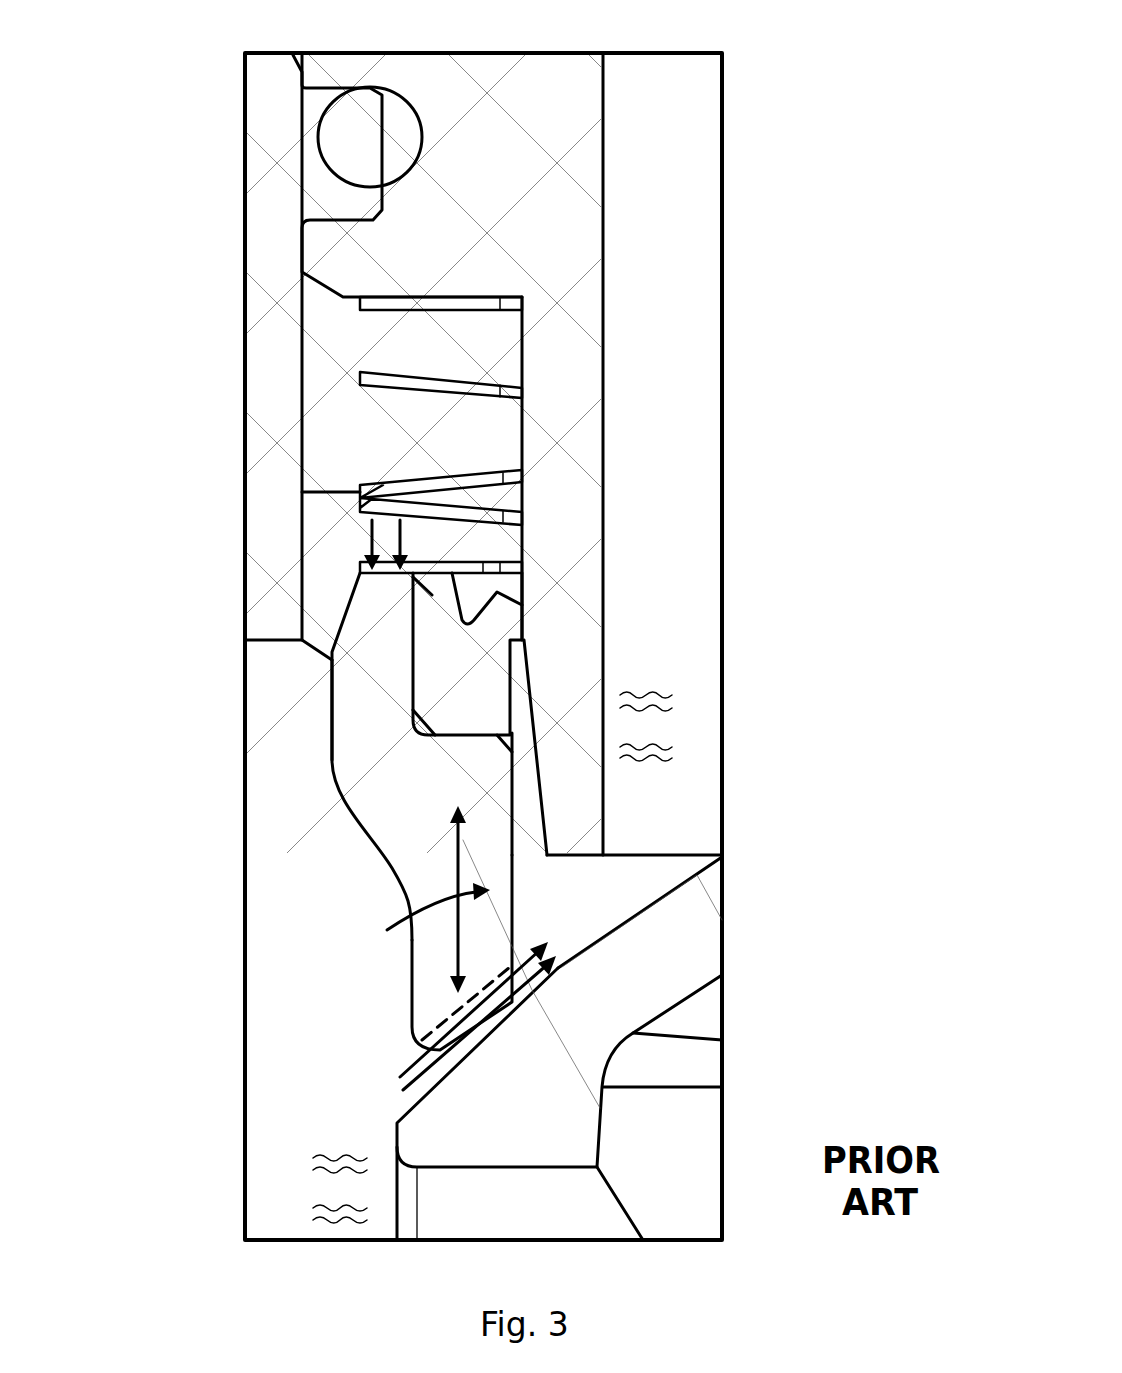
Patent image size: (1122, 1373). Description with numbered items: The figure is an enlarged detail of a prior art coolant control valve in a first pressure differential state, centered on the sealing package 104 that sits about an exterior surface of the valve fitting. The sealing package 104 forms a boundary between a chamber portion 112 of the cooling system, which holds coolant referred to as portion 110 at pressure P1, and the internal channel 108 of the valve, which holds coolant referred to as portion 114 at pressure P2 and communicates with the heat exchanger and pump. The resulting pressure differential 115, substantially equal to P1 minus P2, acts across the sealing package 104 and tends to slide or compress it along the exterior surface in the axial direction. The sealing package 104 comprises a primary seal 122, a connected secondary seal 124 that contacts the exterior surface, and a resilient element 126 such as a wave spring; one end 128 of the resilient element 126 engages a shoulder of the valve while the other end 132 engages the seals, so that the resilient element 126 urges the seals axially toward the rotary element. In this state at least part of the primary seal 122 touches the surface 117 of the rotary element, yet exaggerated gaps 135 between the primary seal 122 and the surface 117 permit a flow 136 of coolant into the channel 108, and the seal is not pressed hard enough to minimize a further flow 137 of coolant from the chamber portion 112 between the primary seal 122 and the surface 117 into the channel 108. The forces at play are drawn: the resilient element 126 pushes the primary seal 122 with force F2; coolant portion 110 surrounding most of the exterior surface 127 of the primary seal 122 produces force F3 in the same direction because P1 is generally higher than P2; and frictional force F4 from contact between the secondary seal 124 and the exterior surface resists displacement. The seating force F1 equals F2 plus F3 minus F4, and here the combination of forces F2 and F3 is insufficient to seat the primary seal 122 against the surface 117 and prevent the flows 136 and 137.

The sealing package 104 is at (318, 608).
The internal channel 108 is at (660, 70).
The portion of coolant 110 is at (340, 1150).
The portion of cooling system 112 is at (313, 925).
The portion of coolant 114 is at (638, 760).
The pressure differential 115 is at (427, 908).
The surface of rotary element 117 is at (648, 905).
The primary seal 122 is at (318, 704).
The secondary seal 124 is at (524, 680).
The resilient element 126 is at (433, 462).
The exterior surface of primary seal 127 is at (330, 740).
The end of resilient element 128 is at (457, 295).
The end of resilient element 132 is at (482, 572).
The gaps 135 is at (457, 1013).
The flow of coolant 136 is at (400, 1073).
The flow of coolant 137 is at (403, 1090).
The seating force F1 is at (457, 955).
The force of resilient element F2 is at (400, 528).
The pressure force on seal F3 is at (372, 548).
The frictional force F4 is at (457, 837).
The pressure of chamber coolant P1 is at (341, 1189).
The pressure of channel coolant P2 is at (646, 731).